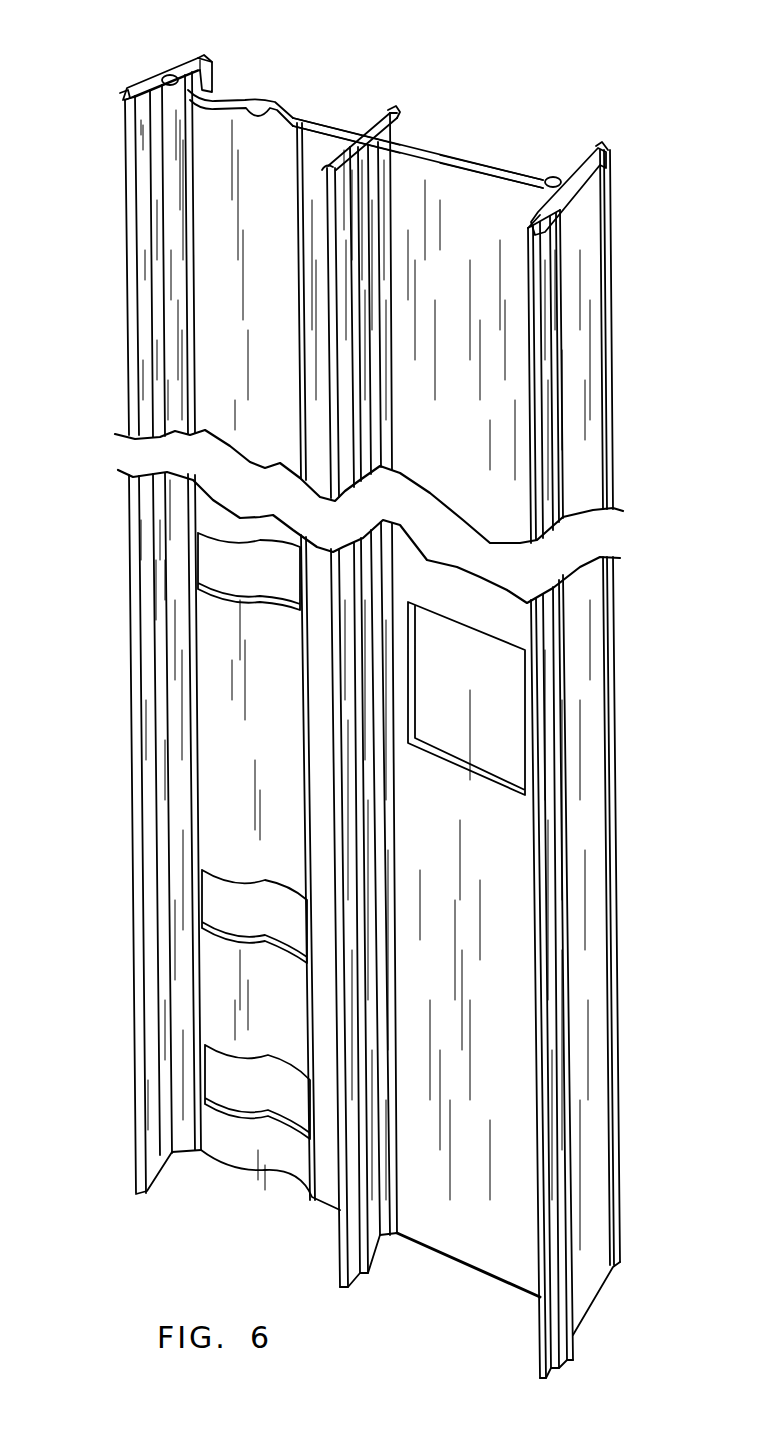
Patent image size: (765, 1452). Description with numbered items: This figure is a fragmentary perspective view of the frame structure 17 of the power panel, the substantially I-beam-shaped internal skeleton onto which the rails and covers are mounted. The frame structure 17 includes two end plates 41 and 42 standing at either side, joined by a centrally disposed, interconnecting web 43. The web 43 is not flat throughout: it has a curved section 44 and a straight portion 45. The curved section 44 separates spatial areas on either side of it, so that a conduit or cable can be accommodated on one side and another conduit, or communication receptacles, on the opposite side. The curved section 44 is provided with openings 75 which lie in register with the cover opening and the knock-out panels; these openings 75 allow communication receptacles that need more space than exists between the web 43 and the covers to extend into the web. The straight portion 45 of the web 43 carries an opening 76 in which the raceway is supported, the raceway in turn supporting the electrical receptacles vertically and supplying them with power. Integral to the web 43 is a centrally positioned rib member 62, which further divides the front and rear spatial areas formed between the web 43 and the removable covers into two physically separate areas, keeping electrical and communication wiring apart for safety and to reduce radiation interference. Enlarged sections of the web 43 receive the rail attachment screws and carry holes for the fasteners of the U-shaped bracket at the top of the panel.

The frame structure 17 is at (426, 146).
The end plate 41 is at (158, 82).
The end plate 42 is at (562, 178).
The web 43 is at (340, 126).
The curved section 44 is at (280, 100).
The straight portion 45 is at (488, 158).
The rib member 62 is at (368, 118).
The opening 75 is at (225, 562).
The opening 76 is at (498, 633).